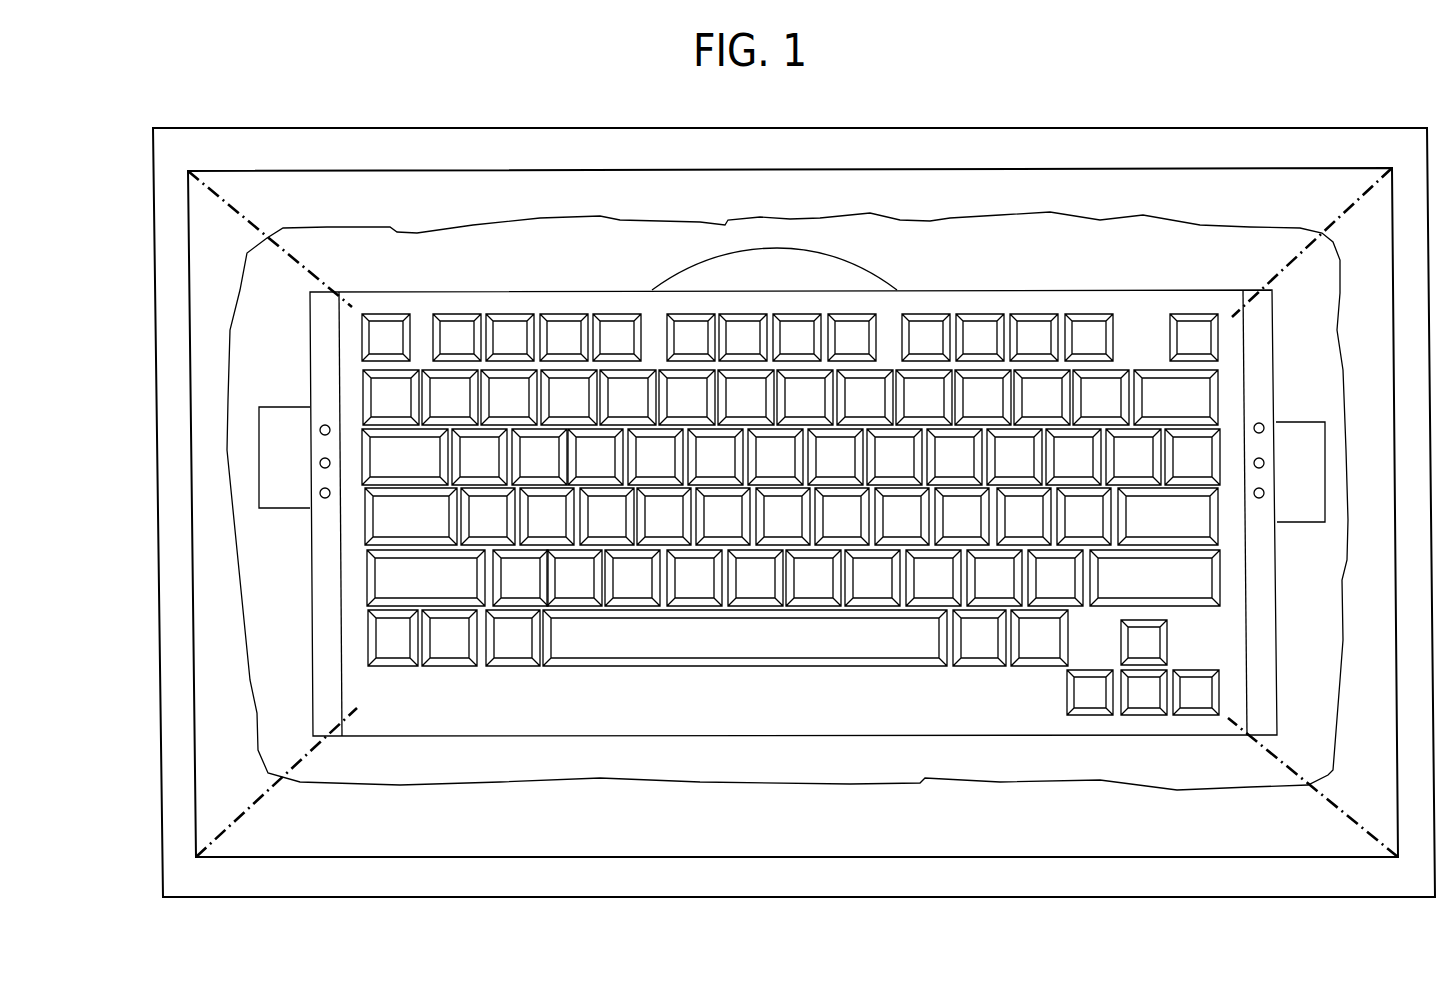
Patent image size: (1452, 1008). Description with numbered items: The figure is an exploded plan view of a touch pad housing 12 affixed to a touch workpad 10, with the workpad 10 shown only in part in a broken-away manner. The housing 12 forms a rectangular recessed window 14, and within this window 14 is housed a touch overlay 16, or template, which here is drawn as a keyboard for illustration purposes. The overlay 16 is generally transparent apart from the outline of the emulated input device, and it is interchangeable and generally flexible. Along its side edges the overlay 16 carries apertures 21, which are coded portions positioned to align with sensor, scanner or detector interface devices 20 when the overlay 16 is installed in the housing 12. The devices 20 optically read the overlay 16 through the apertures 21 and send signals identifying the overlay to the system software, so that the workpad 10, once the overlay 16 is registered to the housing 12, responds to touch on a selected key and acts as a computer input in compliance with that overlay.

The touch workpad 10 is at (840, 772).
The touch pad housing 12 is at (1158, 127).
The recessed window 14 is at (595, 858).
The touch overlay 16 is at (785, 720).
The sensor interface devices 20 is at (290, 497).
The apertures 21 is at (321, 425).